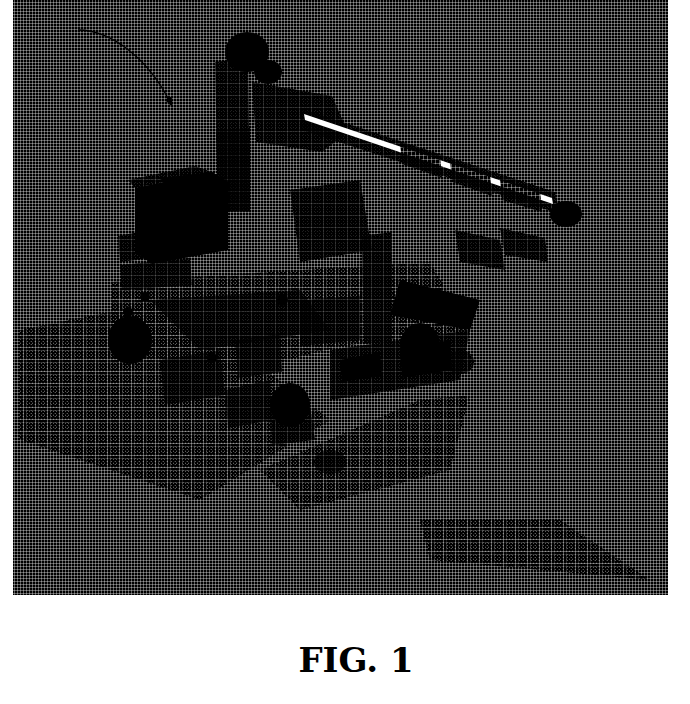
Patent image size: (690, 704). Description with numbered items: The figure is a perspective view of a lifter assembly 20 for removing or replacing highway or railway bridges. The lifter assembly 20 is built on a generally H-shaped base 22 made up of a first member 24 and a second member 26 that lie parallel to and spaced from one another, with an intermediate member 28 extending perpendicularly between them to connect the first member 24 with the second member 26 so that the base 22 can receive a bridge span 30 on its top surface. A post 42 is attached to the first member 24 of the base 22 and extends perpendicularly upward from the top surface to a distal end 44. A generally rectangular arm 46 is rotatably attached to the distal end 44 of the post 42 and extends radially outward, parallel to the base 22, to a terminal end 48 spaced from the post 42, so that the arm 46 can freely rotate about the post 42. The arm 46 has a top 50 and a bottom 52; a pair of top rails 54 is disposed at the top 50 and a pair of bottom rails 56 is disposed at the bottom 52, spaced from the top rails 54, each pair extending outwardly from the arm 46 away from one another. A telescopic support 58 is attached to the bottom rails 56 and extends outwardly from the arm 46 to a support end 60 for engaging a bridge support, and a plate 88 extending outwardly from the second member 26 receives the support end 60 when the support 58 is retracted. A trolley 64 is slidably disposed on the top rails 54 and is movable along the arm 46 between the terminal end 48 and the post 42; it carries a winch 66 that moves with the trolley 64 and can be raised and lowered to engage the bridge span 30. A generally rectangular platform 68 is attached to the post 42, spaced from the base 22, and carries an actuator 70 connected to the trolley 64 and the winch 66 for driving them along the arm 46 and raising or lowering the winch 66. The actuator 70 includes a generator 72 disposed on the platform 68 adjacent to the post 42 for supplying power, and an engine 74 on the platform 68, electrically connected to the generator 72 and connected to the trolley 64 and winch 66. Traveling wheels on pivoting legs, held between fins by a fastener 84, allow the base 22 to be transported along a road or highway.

The lifter assembly 20 is at (110, 62).
The base 22 is at (364, 392).
The first member 24 is at (176, 356).
The second member 26 is at (324, 336).
The intermediate member 28 is at (334, 268).
The bridge span 30 is at (360, 266).
The post 42 is at (216, 154).
The distal end 44 is at (232, 112).
The arm 46 is at (368, 132).
The terminal end 48 is at (560, 228).
The top 50 is at (514, 196).
The bottom 52 is at (532, 252).
The top rails 54 is at (464, 186).
The bottom rails 56 is at (470, 254).
The support 58 is at (420, 160).
The support end 60 is at (430, 370).
The trolley 64 is at (288, 82).
The winch 66 is at (334, 116).
The platform 68 is at (122, 240).
The actuator 70 is at (140, 196).
The generator 72 is at (150, 226).
The engine 74 is at (238, 178).
The fastener 84 is at (244, 368).
The plate 88 is at (364, 373).